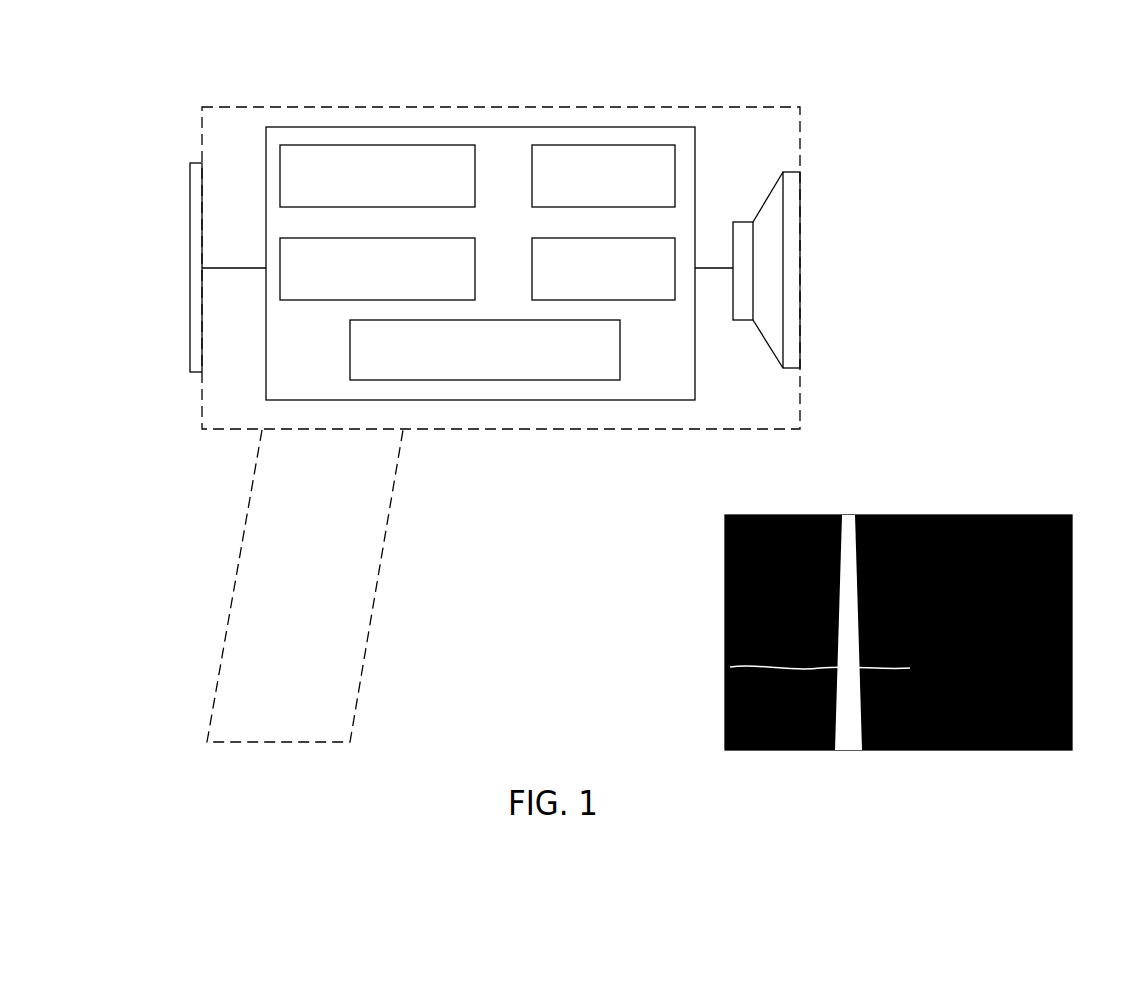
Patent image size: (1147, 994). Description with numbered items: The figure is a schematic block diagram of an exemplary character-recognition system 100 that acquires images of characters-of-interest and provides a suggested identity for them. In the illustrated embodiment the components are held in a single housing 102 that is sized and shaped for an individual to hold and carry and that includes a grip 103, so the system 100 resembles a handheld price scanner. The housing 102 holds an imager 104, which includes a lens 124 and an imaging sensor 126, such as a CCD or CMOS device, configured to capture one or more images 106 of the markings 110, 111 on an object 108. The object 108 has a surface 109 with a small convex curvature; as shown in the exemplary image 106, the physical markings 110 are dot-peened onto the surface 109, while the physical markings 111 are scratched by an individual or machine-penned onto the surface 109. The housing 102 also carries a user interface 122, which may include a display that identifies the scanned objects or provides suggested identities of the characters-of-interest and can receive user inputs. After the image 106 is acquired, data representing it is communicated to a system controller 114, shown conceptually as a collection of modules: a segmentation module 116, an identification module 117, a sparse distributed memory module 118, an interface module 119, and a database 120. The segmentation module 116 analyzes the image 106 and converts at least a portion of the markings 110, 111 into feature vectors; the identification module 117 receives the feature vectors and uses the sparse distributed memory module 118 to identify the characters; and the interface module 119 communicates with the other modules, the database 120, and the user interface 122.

The character-recognition system 100 is at (848, 83).
The housing 102 is at (723, 106).
The grip 103 is at (382, 550).
The imager 104 is at (765, 345).
The image 106 is at (1042, 491).
The object 108 is at (1055, 596).
The surface 109 is at (1013, 616).
The physical markings 110 is at (717, 675).
The physical markings 111 is at (717, 528).
The system controller 114 is at (266, 180).
The segmentation module 116 is at (497, 162).
The identification module 117 is at (532, 188).
The sparse distributed memory module 118 is at (497, 256).
The interface module 119 is at (532, 283).
The database 120 is at (636, 340).
The user interface 122 is at (190, 172).
The lens 124 is at (795, 172).
The imaging sensor 126 is at (745, 222).